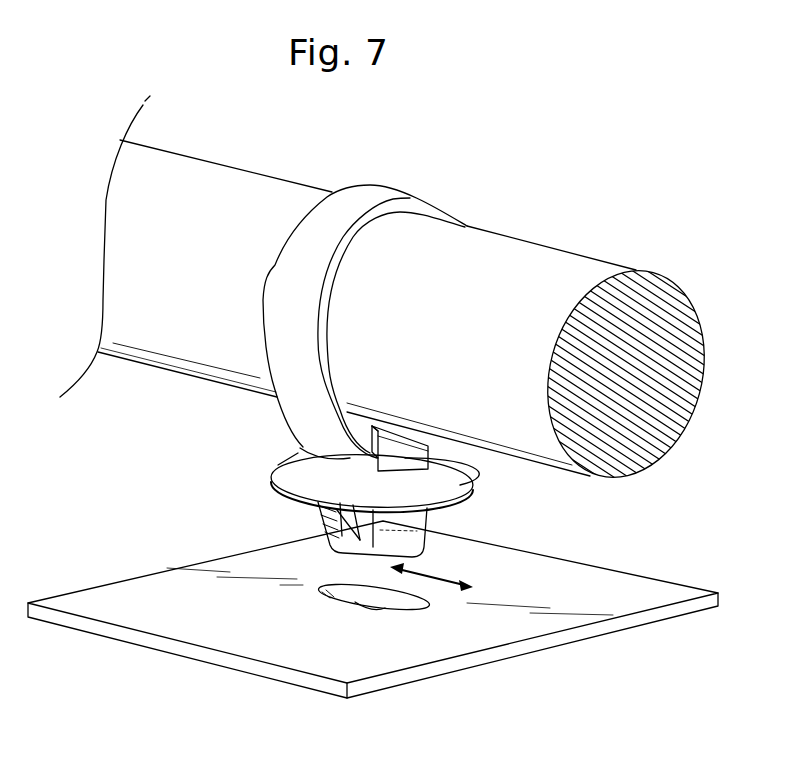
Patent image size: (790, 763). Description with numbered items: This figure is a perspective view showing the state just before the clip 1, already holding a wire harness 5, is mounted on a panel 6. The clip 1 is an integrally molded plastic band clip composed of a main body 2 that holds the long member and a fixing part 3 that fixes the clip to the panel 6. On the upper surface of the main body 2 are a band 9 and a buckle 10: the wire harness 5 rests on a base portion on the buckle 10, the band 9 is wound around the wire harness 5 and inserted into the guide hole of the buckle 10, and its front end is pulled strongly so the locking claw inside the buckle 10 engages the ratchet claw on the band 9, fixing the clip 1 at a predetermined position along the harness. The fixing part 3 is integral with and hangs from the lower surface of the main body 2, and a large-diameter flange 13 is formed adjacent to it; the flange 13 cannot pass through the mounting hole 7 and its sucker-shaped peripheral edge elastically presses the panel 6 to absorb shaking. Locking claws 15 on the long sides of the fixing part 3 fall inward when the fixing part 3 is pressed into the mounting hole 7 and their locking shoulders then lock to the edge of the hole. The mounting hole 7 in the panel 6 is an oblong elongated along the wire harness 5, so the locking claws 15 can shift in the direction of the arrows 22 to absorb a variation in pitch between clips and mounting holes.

The clip 1 is at (329, 371).
The main body 2 is at (265, 480).
The fixing part 3 is at (442, 516).
The wire harness 5 is at (230, 195).
The panel 6 is at (107, 605).
The mounting hole 7 is at (392, 612).
The band 9 is at (305, 421).
The buckle 10 is at (445, 448).
The flange 13 is at (467, 494).
The locking claws 15 is at (320, 520).
The arrows 22 is at (443, 580).